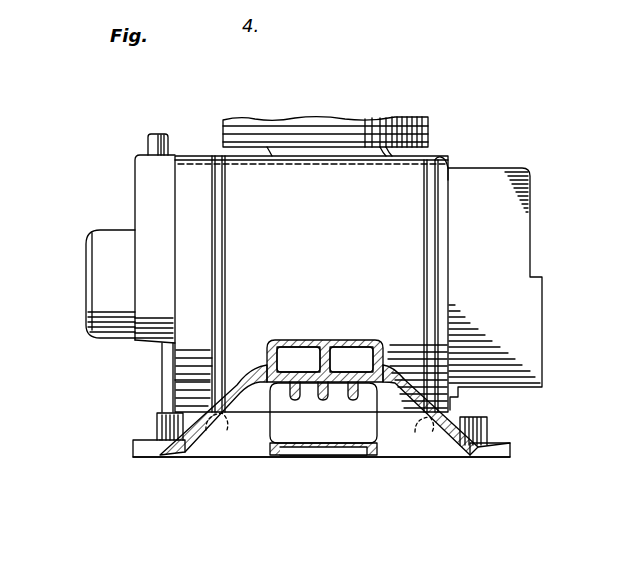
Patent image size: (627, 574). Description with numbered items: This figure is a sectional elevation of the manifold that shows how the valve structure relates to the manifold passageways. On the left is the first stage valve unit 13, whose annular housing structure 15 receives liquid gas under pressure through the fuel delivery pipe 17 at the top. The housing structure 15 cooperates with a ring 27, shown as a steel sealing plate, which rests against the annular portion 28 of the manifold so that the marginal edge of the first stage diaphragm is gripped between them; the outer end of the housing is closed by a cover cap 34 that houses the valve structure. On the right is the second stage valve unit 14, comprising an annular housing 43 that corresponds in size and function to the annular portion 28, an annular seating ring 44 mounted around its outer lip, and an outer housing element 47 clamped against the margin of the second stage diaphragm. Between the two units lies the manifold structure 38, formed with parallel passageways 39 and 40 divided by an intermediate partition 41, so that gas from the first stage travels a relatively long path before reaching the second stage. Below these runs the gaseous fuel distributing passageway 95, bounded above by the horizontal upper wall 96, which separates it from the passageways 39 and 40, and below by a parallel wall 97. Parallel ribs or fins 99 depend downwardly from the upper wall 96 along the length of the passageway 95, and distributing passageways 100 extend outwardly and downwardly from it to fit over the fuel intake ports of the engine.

The first stage valve unit 13 is at (132, 188).
The second stage valve unit 14 is at (537, 154).
The housing structure 15 is at (147, 197).
The fuel delivery pipe 17 is at (147, 143).
The ring 27 is at (220, 152).
The annular portion 28 is at (230, 347).
The cover cap 34 is at (100, 288).
The manifold structure 38 is at (404, 360).
The manifold passageway 39 is at (290, 348).
The manifold passageway 40 is at (355, 350).
The intermediate partition 41 is at (326, 350).
The annular housing 43 is at (420, 286).
The annular seating ring 44 is at (437, 157).
The outer housing element 47 is at (517, 217).
The gaseous fuel distributing passageway 95 is at (312, 437).
The upper wall 96 is at (273, 384).
The wall 97 is at (343, 450).
The ribs or fins 99 is at (350, 396).
The distributing passageways 100 is at (217, 447).